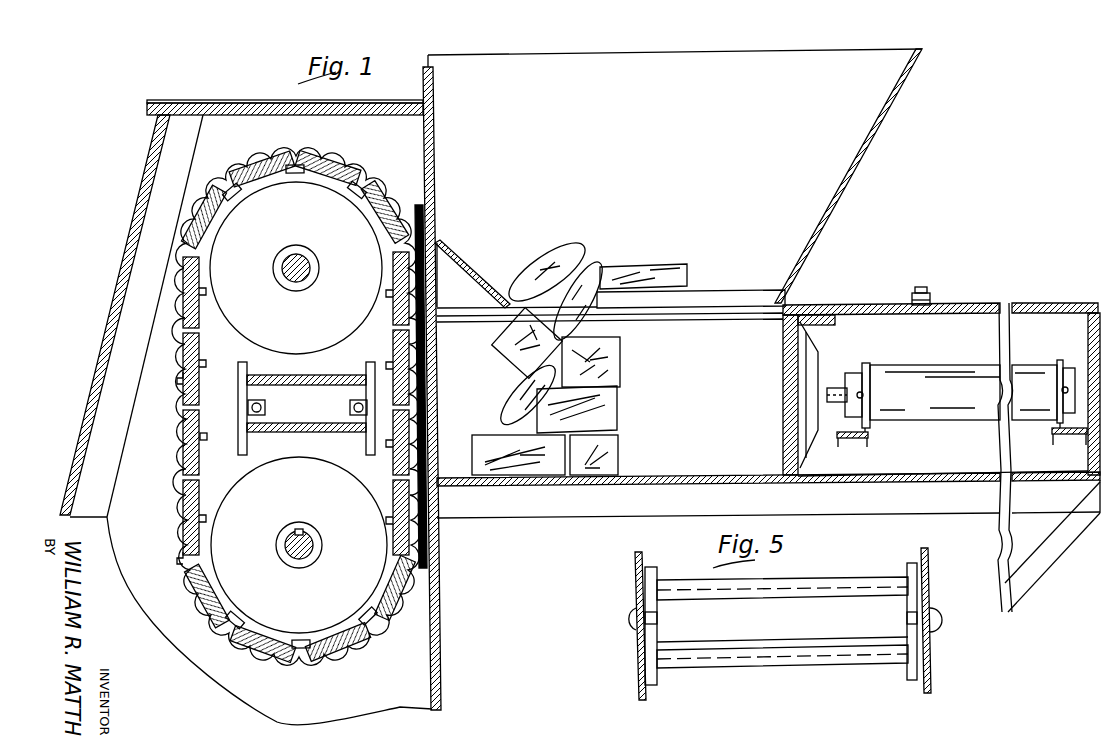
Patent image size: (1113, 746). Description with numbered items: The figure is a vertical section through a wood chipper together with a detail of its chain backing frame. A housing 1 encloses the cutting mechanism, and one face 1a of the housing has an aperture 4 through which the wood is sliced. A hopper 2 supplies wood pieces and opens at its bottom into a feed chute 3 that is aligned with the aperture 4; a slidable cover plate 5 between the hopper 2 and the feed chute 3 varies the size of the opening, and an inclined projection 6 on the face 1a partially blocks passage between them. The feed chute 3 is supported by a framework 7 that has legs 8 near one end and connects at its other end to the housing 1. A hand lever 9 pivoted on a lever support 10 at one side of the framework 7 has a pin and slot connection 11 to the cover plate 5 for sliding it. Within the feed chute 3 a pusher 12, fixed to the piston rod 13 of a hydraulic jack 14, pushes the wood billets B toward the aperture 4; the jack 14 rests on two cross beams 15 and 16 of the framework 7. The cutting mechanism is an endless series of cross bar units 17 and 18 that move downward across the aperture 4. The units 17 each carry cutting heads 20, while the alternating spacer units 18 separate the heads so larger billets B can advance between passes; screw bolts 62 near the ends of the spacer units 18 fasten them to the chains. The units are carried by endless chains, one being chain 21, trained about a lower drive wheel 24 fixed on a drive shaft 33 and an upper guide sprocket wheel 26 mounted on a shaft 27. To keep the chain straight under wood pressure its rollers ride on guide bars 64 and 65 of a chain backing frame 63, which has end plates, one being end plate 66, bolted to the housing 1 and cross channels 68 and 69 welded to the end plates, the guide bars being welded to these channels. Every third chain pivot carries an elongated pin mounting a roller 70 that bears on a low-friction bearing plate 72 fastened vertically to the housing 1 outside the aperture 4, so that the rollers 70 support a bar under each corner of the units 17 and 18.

In FIG. 1, the housing 1 is at (128, 240).
In FIG. 5, the housing 1 is at (634, 654).
In FIG. 1, the face of the housing 1a is at (436, 187).
In FIG. 1, the hopper 2 is at (868, 157).
In FIG. 1, the feed chute 3 is at (680, 403).
In FIG. 1, the aperture 4 is at (438, 452).
In FIG. 1, the slidable cover plate 5 is at (869, 304).
In FIG. 1, the inclined projection 6 is at (463, 258).
In FIG. 5, the inclined projection 6 is at (931, 620).
In FIG. 1, the framework 7 is at (438, 333).
In FIG. 1, the legs 8 is at (335, 418).
In FIG. 1, the hand lever 9 is at (931, 292).
In FIG. 1, the lever support 10 is at (932, 300).
In FIG. 1, the pin and slot connection 11 is at (921, 287).
In FIG. 1, the pusher 12 is at (783, 422).
In FIG. 1, the piston rod 13 is at (833, 387).
In FIG. 1, the hydraulic jack 14 is at (928, 403).
In FIG. 1, the cross beam 15 is at (868, 440).
In FIG. 1, the cross beam 16 is at (1054, 441).
In FIG. 1, the cutting units 17 is at (203, 368).
In FIG. 1, the spacer units 18 is at (207, 437).
In FIG. 1, the cutting heads 20 is at (180, 382).
In FIG. 1, the endless chain 21 is at (180, 466).
In FIG. 1, the lower drive wheel 24 is at (314, 518).
In FIG. 1, the upper guide sprocket wheel 26 is at (308, 340).
In FIG. 1, the shaft 27 is at (296, 256).
In FIG. 1, the drive shaft 33 is at (296, 566).
In FIG. 1, the screw bolts 62 is at (248, 410).
In FIG. 1, the chain backing frame 63 is at (308, 436).
In FIG. 5, the chain backing frame 63 is at (825, 665).
In FIG. 1, the guide bar 64 is at (384, 453).
In FIG. 5, the guide bar 64 is at (651, 685).
In FIG. 5, the guide bar 65 is at (915, 682).
In FIG. 5, the end plate 66 is at (636, 618).
In FIG. 1, the cross channel 68 is at (286, 384).
In FIG. 5, the cross channel 68 is at (808, 592).
In FIG. 1, the cross channel 69 is at (308, 424).
In FIG. 5, the cross channel 69 is at (841, 648).
In FIG. 1, the roller 70 is at (180, 410).
In FIG. 1, the bearing plate 72 is at (410, 576).
In FIG. 1, the wood billets B is at (614, 362).